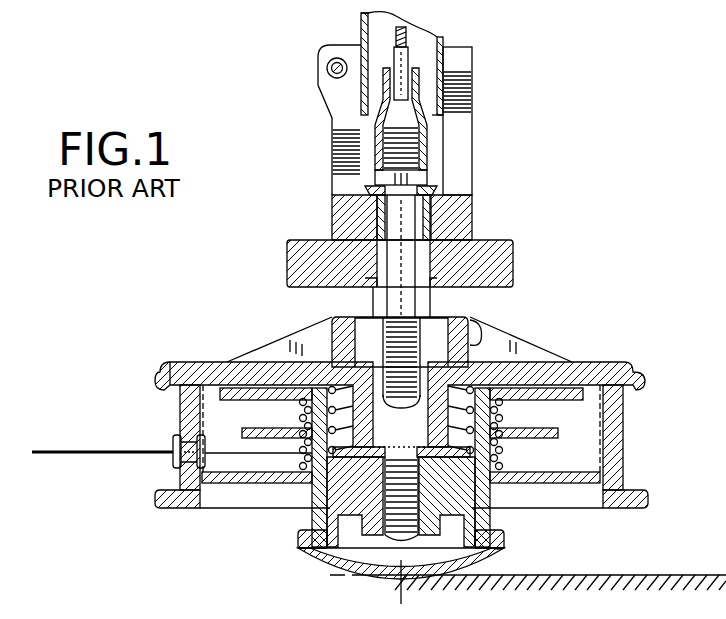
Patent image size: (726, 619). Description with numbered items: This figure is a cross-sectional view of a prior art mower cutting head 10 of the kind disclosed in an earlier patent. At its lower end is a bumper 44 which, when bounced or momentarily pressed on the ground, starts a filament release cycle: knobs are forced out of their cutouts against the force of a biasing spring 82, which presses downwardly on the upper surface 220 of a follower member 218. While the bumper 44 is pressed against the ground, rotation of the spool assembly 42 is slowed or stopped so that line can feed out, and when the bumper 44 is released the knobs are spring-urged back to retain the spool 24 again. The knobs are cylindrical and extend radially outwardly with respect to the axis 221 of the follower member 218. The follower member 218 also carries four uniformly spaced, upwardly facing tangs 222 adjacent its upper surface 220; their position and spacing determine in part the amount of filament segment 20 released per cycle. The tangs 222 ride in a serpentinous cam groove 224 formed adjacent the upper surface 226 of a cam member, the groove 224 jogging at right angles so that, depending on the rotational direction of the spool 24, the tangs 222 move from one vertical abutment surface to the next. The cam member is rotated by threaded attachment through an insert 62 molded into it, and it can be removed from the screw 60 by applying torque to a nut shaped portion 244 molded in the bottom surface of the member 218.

The cutting head 10 is at (203, 341).
The filament segment 20 is at (103, 432).
The axis 221 is at (330, 360).
The spring 82 is at (482, 358).
The upper surface 226 is at (307, 425).
The upper surface 220 is at (499, 420).
The tangs 222 is at (312, 493).
The cam groove 224 is at (303, 510).
The spool assembly 42 is at (303, 518).
The follower member 218 is at (308, 551).
The spool 24 is at (492, 500).
The nut shaped portion 244 is at (506, 540).
The bumper 44 is at (492, 554).
The screw 60 is at (528, 582).
The insert 62 is at (560, 588).